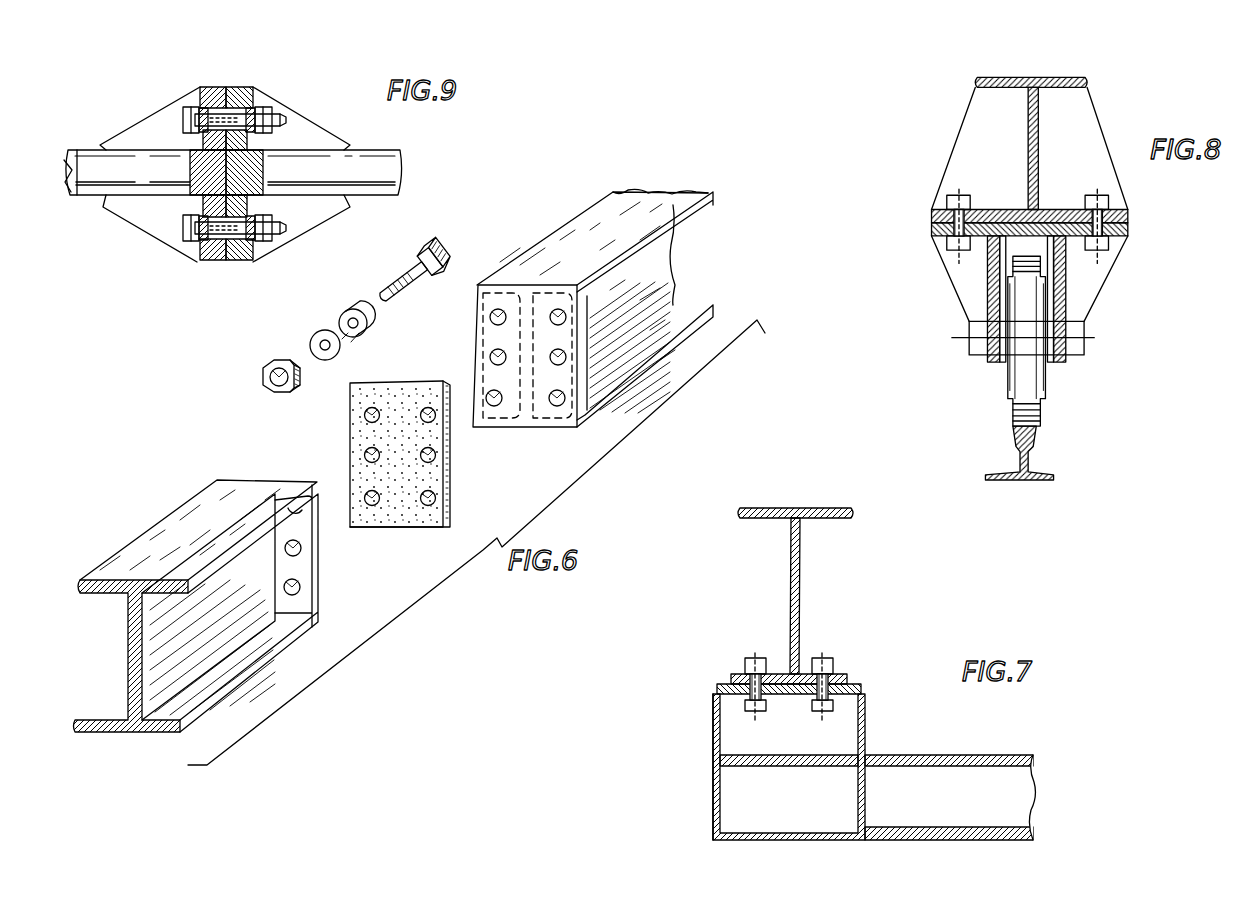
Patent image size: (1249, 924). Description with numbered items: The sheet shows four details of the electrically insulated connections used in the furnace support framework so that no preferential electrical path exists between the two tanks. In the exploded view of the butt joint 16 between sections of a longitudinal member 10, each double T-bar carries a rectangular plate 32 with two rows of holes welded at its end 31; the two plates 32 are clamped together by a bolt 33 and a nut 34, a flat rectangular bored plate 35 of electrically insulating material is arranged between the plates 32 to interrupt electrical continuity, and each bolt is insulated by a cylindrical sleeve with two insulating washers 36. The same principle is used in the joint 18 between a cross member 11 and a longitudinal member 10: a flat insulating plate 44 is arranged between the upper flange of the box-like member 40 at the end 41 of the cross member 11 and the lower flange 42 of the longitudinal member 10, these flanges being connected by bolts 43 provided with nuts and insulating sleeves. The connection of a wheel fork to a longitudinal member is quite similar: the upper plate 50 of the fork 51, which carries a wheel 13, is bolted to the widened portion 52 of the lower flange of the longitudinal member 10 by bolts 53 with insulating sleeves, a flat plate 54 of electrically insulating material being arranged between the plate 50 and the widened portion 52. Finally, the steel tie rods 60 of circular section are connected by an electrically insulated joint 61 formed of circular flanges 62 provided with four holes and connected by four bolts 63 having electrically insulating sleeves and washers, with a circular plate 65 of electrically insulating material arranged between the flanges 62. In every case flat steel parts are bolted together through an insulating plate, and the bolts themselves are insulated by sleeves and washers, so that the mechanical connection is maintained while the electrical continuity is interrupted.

In FIG. 6, the longitudinal member 10 is at (627, 362).
In FIG. 8, the longitudinal member 10 is at (1028, 160).
In FIG. 7, the longitudinal member 10 is at (794, 570).
In FIG. 7, the cross member 11 is at (1010, 802).
In FIG. 8, the wheel 13 is at (1030, 395).
In FIG. 6, the electrically insulated joint 16 is at (255, 421).
In FIG. 7, the electrically insulated joint 18 is at (888, 674).
In FIG. 6, the end of double T-bar 31 is at (517, 283).
In FIG. 6, the rectangular plate 32 is at (533, 430).
In FIG. 6, the bolt 33 is at (398, 283).
In FIG. 6, the nut 34 is at (272, 370).
In FIG. 6, the insulating plate 35 is at (398, 519).
In FIG. 6, the insulating sleeve with washers 36 is at (340, 320).
In FIG. 7, the box-like member 40 is at (722, 721).
In FIG. 7, the end of cross member 41 is at (720, 797).
In FIG. 7, the lower flange of longitudinal member 42 is at (778, 673).
In FIG. 7, the bolt 43 is at (826, 658).
In FIG. 7, the insulating plate 44 is at (724, 686).
In FIG. 8, the upper plate of fork 50 is at (933, 227).
In FIG. 8, the fork 51 is at (997, 277).
In FIG. 8, the widened portion of lower flange 52 is at (992, 203).
In FIG. 8, the bolt 53 is at (947, 212).
In FIG. 8, the insulating plate 54 is at (1127, 223).
In FIG. 9, the tie rod 60 is at (88, 180).
In FIG. 9, the electrically insulated joint 61 is at (123, 120).
In FIG. 9, the circular flange 62 is at (253, 94).
In FIG. 9, the bolt 63 is at (200, 261).
In FIG. 9, the circular insulating plate 65 is at (223, 262).